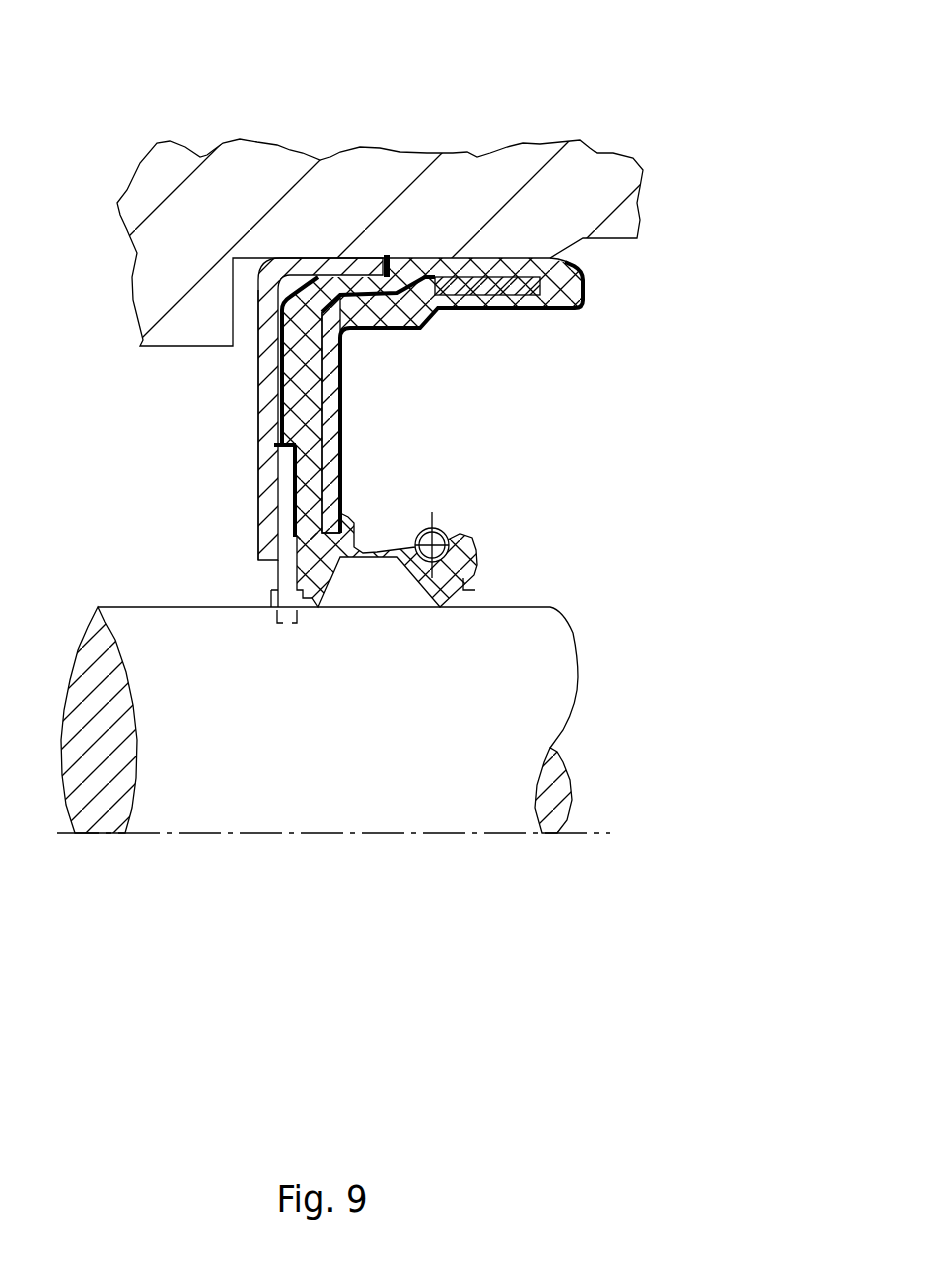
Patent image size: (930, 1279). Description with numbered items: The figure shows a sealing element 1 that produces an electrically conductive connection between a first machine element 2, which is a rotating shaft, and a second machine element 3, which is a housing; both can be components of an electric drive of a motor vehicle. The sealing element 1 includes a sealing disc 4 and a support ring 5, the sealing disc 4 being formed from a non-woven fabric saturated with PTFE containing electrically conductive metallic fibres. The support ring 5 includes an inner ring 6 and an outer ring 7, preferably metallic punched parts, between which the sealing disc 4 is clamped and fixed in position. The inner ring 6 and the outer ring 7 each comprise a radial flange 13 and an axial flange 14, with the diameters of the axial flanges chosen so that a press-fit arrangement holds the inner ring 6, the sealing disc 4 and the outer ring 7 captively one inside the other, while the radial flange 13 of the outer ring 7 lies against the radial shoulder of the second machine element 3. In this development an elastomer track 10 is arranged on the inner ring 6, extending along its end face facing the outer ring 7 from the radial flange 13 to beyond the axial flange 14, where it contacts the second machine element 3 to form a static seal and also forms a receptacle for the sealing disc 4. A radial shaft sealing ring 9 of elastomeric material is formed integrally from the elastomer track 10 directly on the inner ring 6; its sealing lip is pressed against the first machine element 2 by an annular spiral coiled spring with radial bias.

The sealing element 1 is at (572, 348).
The first machine element 2 is at (437, 707).
The second machine element 3 is at (555, 213).
The sealing disc 4 is at (270, 598).
The support ring 5 is at (323, 403).
The inner ring 6 is at (323, 457).
The outer ring 7 is at (260, 469).
The radial shaft sealing ring 9 is at (433, 590).
The elastomer track 10 is at (297, 323).
The radial flange 13 is at (260, 361).
The axial flange 14 is at (325, 268).